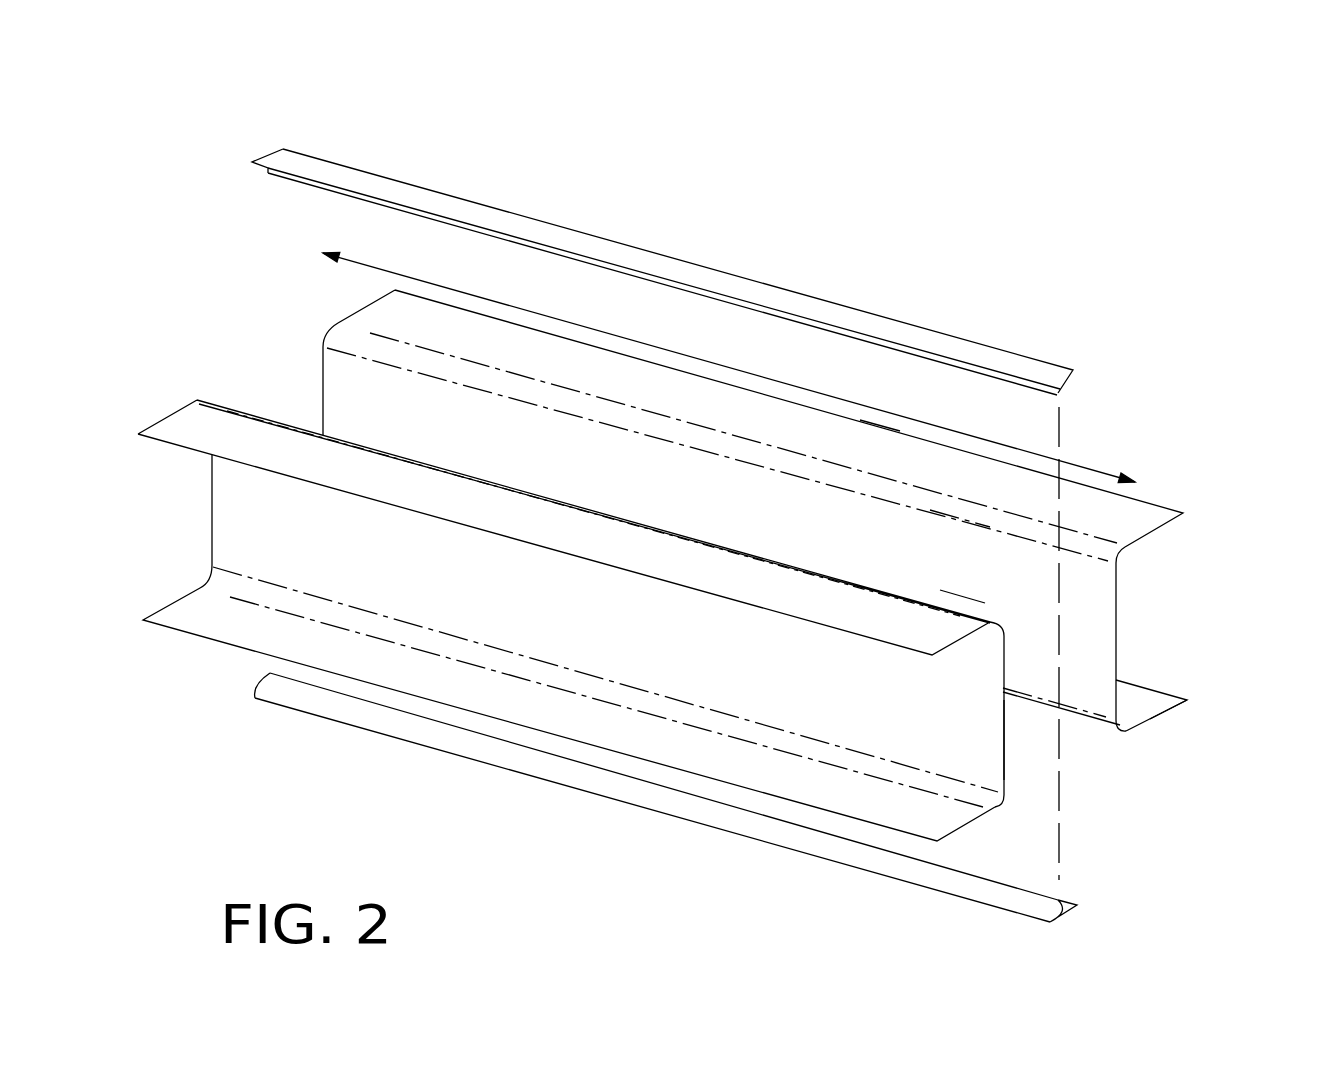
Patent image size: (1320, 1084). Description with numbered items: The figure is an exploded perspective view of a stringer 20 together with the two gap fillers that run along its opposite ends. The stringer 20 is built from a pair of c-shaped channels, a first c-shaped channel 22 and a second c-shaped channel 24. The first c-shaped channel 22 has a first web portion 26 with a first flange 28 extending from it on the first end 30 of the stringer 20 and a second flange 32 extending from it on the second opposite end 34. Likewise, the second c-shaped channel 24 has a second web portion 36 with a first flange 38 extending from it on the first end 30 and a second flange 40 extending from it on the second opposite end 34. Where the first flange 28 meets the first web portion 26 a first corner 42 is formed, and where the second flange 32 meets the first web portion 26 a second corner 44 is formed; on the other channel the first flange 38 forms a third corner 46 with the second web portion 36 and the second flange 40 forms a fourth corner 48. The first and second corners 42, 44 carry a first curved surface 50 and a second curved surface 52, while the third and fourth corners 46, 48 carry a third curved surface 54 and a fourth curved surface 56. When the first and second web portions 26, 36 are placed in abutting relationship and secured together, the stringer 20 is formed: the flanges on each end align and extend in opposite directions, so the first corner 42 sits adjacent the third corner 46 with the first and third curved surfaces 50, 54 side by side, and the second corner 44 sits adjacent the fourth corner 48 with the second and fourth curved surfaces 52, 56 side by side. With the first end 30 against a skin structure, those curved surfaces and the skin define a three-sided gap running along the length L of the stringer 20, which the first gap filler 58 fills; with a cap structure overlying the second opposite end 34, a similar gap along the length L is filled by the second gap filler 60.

The stringer 20 is at (1104, 146).
The first c-shaped channel 22 is at (796, 559).
The second c-shaped channel 24 is at (653, 641).
The first web portion 26 is at (1092, 621).
The first flange 28 is at (1146, 517).
The first end 30 is at (889, 440).
The second flange 32 is at (1154, 721).
The second opposite end 34 is at (1142, 749).
The second web portion 36 is at (921, 707).
The first flange 38 is at (898, 618).
The second flange 40 is at (984, 810).
The first corner 42 is at (1122, 556).
The second corner 44 is at (1117, 737).
The third corner 46 is at (970, 605).
The fourth corner 48 is at (1016, 801).
The first curved surface 50 is at (978, 514).
The second curved surface 52 is at (1092, 724).
The third curved surface 54 is at (991, 622).
The fourth curved surface 56 is at (1003, 800).
The first gap filler 58 is at (800, 304).
The second gap filler 60 is at (609, 787).
The length L is at (498, 301).